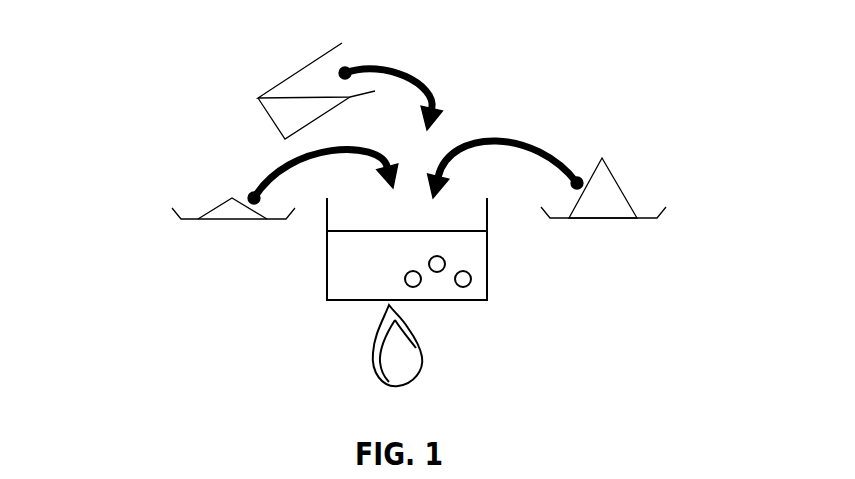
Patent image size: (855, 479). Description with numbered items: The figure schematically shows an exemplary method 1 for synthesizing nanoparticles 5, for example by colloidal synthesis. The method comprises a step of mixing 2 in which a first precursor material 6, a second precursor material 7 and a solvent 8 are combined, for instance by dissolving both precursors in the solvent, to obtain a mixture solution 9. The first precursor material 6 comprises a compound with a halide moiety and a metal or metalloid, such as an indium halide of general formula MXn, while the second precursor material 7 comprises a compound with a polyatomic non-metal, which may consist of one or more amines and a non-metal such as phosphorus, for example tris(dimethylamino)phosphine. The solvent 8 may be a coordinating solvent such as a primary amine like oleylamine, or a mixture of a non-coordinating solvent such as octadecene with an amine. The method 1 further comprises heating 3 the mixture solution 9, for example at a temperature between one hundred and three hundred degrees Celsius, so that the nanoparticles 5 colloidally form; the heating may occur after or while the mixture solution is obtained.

The method 1 is at (87, 184).
The step of mixing 2 is at (471, 114).
The heating 3 is at (446, 354).
The nanoparticles 5 is at (472, 281).
The first precursor material 6 is at (227, 220).
The second precursor material 7 is at (608, 220).
The solvent 8 is at (267, 116).
The mixture solution 9 is at (327, 258).